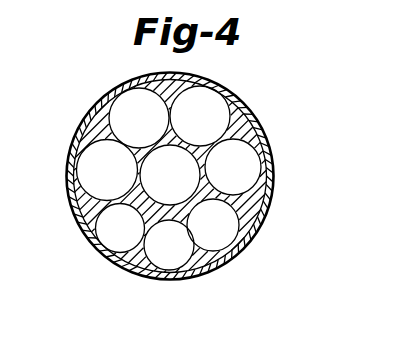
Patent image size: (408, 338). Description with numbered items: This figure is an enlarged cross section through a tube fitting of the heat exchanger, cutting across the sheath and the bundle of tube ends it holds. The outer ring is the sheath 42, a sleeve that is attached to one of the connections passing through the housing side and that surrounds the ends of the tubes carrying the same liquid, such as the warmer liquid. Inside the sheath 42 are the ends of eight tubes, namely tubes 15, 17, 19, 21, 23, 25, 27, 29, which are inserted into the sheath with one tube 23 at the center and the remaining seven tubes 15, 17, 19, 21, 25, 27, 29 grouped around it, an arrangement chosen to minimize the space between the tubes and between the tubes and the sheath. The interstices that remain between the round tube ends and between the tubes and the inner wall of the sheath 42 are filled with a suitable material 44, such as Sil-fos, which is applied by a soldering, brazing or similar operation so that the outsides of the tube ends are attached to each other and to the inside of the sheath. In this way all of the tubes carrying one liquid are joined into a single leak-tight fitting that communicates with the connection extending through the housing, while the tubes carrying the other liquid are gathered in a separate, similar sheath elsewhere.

The tube 15 is at (230, 240).
The tube 17 is at (172, 260).
The tube 19 is at (115, 240).
The tube 21 is at (252, 170).
The tube 23 is at (183, 180).
The tube 25 is at (92, 175).
The tube 27 is at (210, 105).
The tube 29 is at (132, 97).
The sheath 42 is at (92, 110).
The material 44 is at (243, 125).